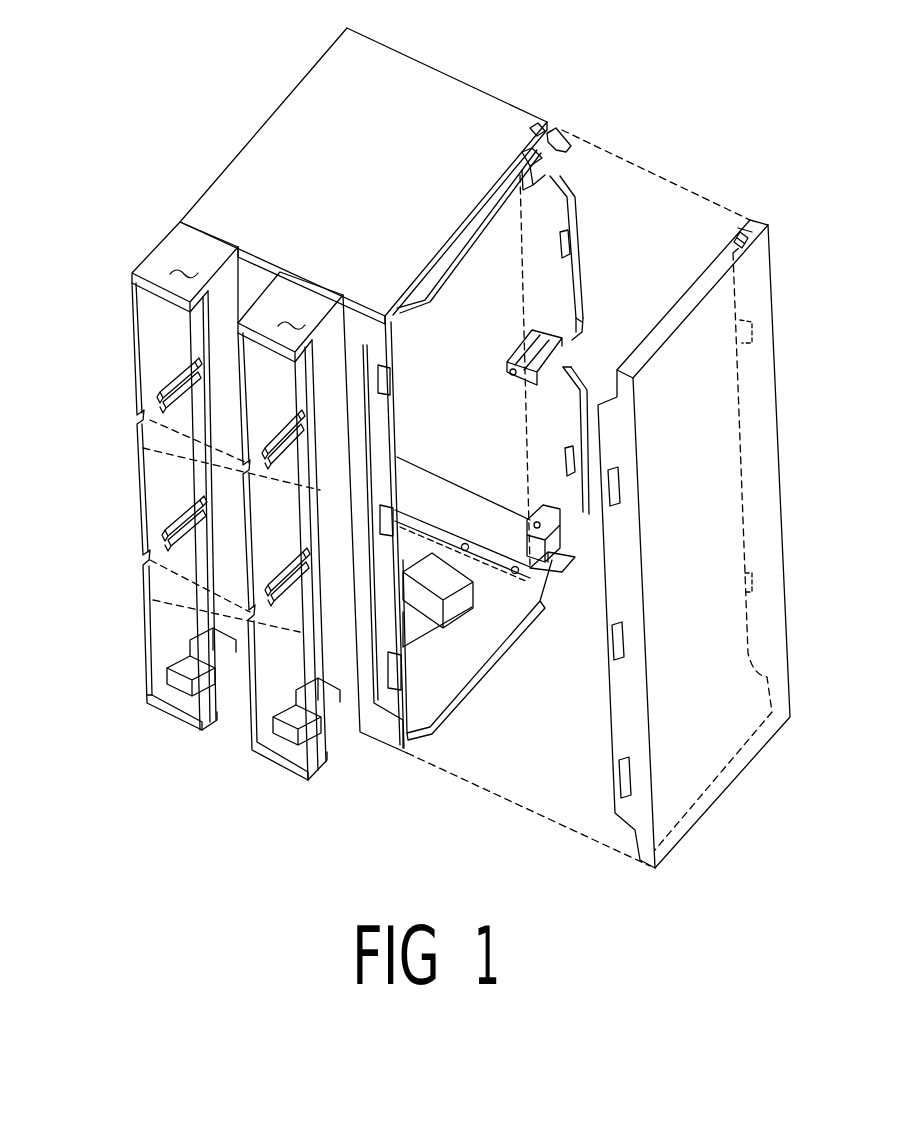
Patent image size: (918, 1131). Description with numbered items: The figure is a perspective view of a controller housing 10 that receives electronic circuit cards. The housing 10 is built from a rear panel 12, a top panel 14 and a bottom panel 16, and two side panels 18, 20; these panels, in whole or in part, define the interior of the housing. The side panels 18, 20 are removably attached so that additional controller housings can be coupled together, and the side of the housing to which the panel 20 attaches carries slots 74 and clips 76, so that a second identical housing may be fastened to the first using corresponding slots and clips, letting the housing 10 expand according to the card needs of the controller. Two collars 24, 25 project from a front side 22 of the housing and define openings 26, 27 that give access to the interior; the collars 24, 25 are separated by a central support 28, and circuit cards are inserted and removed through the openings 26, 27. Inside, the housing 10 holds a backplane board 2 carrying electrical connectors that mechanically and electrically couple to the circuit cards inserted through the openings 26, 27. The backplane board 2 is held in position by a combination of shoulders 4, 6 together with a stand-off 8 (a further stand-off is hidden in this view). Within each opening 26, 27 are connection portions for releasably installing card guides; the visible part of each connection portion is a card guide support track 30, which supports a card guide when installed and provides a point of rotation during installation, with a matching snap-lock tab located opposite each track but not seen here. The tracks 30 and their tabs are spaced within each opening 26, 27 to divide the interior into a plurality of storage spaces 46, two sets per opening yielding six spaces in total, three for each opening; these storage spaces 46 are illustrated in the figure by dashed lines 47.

The controller housing 10 is at (477, 66).
The top panel 14 is at (410, 66).
The side panel 18 is at (235, 152).
The shoulder 6 is at (560, 165).
The rear panel 12 is at (558, 215).
The slots 74 is at (566, 241).
The backplane board 2 is at (525, 300).
The stand-off 8 is at (553, 342).
The shoulder 4 is at (548, 585).
The bottom panel 16 is at (478, 655).
The front side 22 is at (380, 738).
The clips 76 is at (393, 390).
The collar 25 is at (432, 312).
The collar 24 is at (185, 267).
The central support 28 is at (255, 270).
The opening 26 is at (160, 636).
The opening 27 is at (270, 690).
The card guide support track 30 is at (163, 377).
The storage spaces 46 is at (145, 309).
The dashed lines 47 is at (133, 449).
The side panel 20 is at (778, 420).